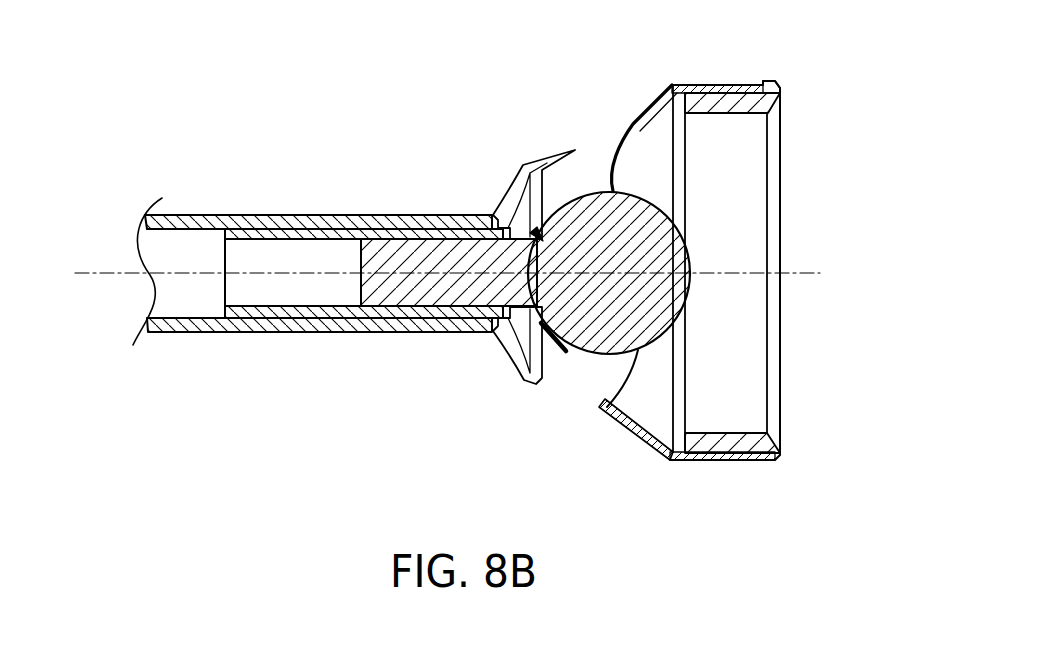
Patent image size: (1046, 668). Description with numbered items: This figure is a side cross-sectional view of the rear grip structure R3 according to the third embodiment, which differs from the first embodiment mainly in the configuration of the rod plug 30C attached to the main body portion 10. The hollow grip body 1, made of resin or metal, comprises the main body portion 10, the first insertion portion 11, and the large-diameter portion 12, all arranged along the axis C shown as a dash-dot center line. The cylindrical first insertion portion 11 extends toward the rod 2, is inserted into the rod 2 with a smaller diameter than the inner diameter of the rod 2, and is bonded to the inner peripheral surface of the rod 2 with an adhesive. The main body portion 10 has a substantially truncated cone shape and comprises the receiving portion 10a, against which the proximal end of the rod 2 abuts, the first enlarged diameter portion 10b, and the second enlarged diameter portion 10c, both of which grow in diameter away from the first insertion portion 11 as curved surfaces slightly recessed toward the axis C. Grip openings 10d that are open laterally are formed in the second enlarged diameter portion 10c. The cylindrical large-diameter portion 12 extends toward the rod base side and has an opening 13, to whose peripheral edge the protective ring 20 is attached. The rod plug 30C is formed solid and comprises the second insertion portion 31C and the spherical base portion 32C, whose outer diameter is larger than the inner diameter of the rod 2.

The grip body 1 is at (410, 107).
The rod 2 is at (248, 214).
The main body portion 10 is at (538, 252).
The receiving portion 10a is at (480, 214).
The first enlarged diameter portion 10b is at (505, 195).
The second enlarged diameter portion 10c is at (657, 100).
The grip opening 10d is at (617, 157).
The first insertion portion 11 is at (283, 319).
The large-diameter portion 12 is at (717, 85).
The opening 13 is at (762, 88).
The protective ring 20 is at (780, 457).
The rod plug 30C is at (590, 358).
The second insertion portion 31C is at (393, 293).
The base portion 32C is at (575, 356).
The rear grip structure R3 is at (273, 67).
The axis C is at (112, 271).